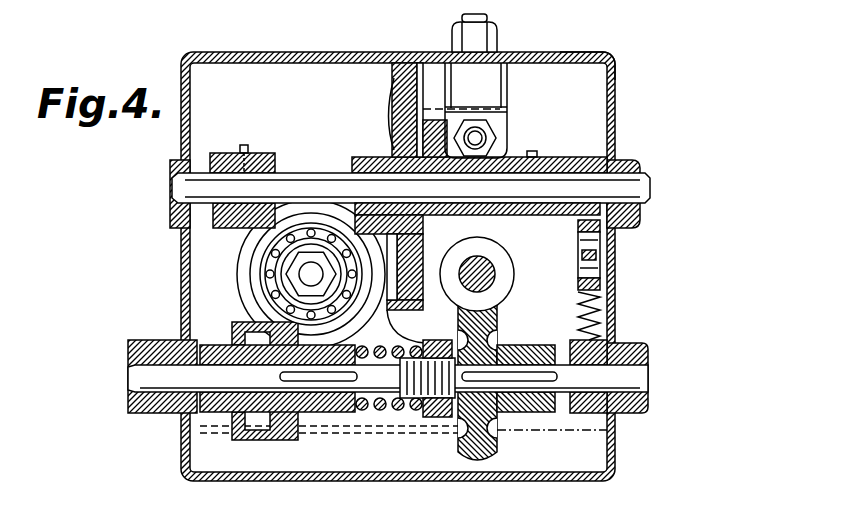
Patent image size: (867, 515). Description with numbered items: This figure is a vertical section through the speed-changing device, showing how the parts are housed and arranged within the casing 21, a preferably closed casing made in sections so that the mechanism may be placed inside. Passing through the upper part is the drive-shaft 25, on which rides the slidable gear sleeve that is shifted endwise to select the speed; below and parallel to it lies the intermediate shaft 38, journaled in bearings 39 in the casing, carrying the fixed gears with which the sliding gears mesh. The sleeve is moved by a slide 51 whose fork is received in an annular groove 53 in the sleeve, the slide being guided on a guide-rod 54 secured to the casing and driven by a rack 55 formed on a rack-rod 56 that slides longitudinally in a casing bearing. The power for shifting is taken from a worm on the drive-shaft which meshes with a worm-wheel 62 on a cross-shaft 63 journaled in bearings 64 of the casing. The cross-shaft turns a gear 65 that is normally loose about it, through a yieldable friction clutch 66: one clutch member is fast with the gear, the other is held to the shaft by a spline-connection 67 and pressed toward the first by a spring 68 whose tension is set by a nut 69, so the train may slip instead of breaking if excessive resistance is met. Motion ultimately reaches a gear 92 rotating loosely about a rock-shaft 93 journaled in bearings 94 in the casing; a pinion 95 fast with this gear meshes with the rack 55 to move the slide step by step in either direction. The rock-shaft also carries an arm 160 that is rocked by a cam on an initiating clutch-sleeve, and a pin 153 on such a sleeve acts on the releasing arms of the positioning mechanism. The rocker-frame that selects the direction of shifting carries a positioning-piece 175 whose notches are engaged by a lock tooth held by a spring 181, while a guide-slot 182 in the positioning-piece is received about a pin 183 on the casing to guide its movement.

The casing 21 is at (614, 82).
The drive-shaft 25 is at (583, 254).
The intermediate shaft 38 is at (305, 268).
The bearings 39 is at (262, 282).
The slide 51 is at (478, 136).
The annular groove 53 is at (433, 110).
The guide-rod 54 is at (597, 53).
The rack 55 is at (430, 157).
The rack-rod 56 is at (428, 135).
The worm-wheel 62 is at (487, 455).
The cross-shaft 63 is at (128, 377).
The bearings 64 is at (150, 415).
The gear 65 is at (212, 330).
The friction clutch 66 is at (272, 427).
The spline-connection 67 is at (582, 314).
The spring 68 is at (392, 404).
The nut 69 is at (440, 400).
The gear 92 is at (397, 70).
The rock-shaft 93 is at (172, 188).
The bearings 94 is at (183, 172).
The pinion 95 is at (447, 221).
The pin 153 is at (258, 155).
The arm 160 is at (550, 155).
The positioning-piece 175 is at (582, 285).
The spring 181 is at (582, 296).
The guide-slot 182 is at (580, 262).
The pin 183 is at (600, 257).